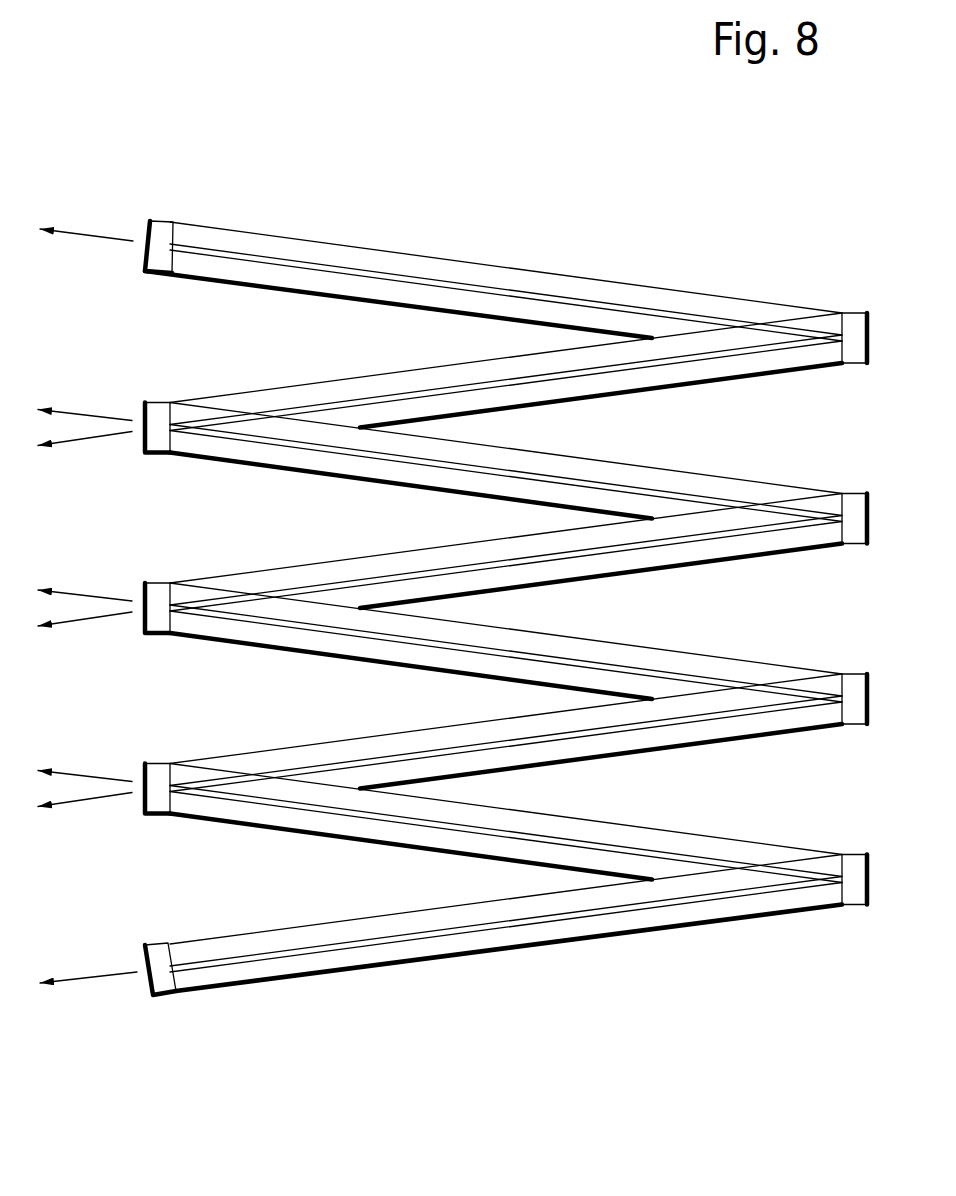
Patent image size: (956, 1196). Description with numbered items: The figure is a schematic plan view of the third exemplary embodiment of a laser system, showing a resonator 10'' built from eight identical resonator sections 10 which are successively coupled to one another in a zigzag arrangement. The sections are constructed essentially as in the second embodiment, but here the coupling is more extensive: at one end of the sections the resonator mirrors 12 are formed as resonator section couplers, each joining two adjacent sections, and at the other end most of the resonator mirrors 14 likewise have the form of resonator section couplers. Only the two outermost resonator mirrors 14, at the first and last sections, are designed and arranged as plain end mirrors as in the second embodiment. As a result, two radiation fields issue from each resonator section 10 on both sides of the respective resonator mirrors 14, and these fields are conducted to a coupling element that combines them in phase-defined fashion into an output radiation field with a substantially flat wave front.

The resonator 10'' is at (470, 575).
The resonator section 10 is at (493, 605).
The resonator mirror 12 is at (852, 345).
The resonator mirror 14 is at (115, 1028).